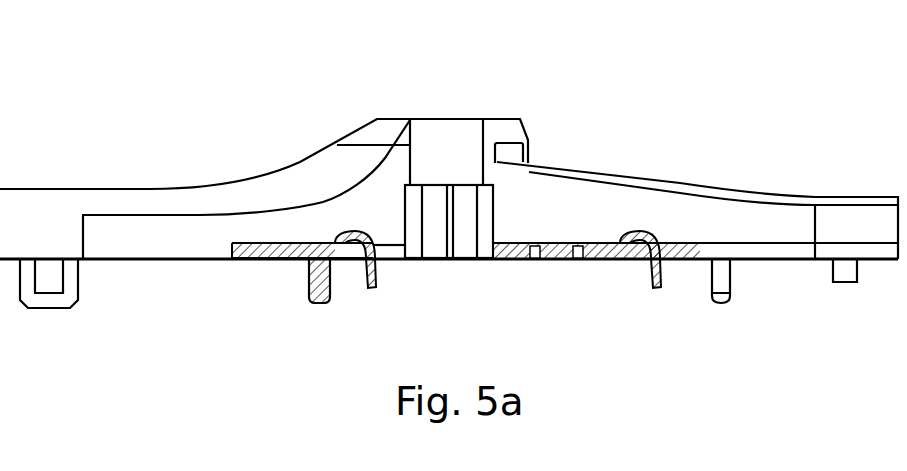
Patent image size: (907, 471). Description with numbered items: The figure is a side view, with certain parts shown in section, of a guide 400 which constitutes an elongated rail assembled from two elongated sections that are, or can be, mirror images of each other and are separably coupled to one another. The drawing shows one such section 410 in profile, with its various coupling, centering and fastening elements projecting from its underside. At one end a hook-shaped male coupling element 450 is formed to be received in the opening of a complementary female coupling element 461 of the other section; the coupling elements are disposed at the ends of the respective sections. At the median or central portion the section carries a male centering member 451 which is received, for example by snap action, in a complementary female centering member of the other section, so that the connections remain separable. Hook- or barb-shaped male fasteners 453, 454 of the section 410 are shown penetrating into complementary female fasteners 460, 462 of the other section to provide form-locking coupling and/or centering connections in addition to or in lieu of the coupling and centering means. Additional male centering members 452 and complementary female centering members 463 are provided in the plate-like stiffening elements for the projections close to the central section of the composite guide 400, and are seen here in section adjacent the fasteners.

The guide 400 is at (449, 216).
The section 410 is at (172, 198).
The male coupling element 450 is at (845, 275).
The male centering member 451 is at (722, 285).
The additional male centering member 452 is at (320, 305).
The male fastener 453 is at (654, 289).
The male fastener 454 is at (377, 289).
The female fastener 460 is at (255, 245).
The female coupling element 461 is at (48, 285).
The female fastener 462 is at (532, 260).
The female centering member 463 is at (578, 260).